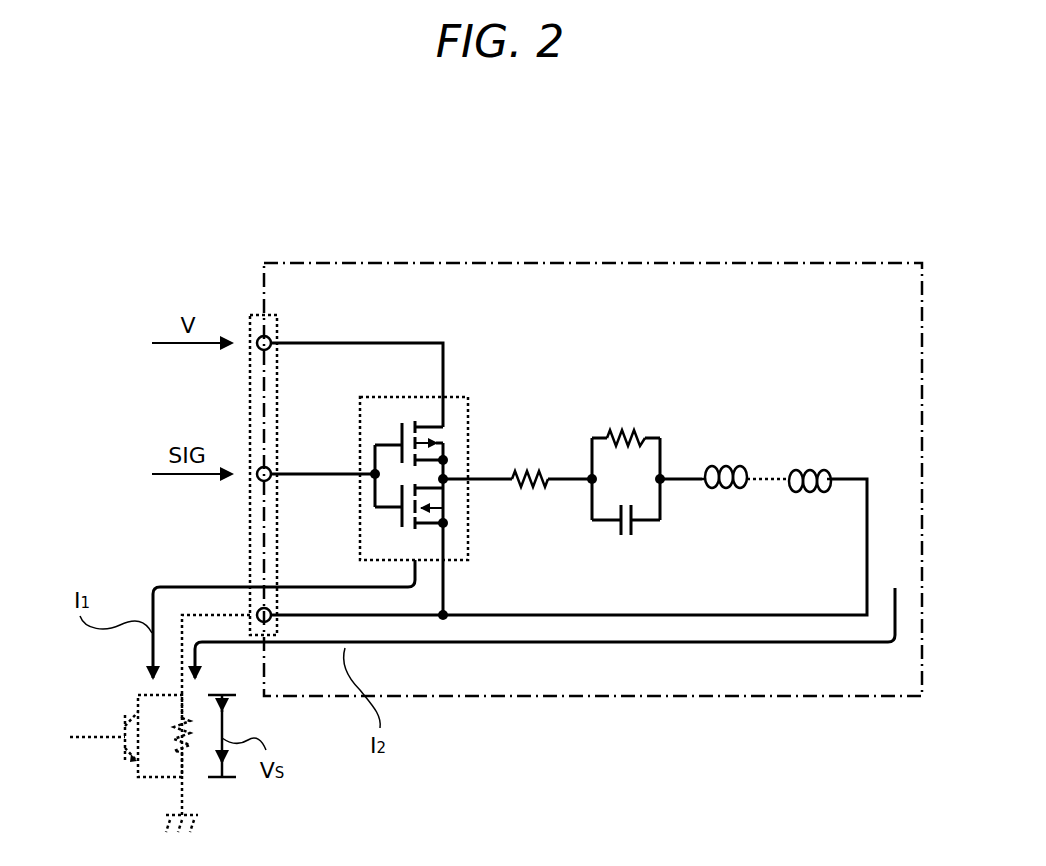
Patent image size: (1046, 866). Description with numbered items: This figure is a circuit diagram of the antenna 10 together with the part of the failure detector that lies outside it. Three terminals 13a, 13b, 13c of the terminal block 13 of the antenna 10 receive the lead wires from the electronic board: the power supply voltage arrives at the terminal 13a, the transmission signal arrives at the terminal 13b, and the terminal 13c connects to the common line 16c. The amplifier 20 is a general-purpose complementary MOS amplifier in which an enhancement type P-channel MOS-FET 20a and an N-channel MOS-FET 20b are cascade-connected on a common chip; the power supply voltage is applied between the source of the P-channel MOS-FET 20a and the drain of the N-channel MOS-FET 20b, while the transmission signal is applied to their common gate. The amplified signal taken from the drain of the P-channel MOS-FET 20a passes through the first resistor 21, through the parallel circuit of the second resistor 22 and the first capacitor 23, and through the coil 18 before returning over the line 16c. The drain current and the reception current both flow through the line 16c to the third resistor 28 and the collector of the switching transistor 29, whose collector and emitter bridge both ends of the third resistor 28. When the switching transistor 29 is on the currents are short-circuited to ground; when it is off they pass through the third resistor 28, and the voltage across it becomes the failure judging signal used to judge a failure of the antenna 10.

The antenna 10 is at (772, 256).
The terminals 13 is at (255, 313).
The terminal 13a is at (271, 341).
The terminal 13b is at (271, 473).
The terminal 13c is at (271, 612).
The line 16c is at (213, 612).
The coil 18 is at (702, 455).
The amplifier 20 is at (440, 448).
The P-channel MOS-FET 20a is at (450, 438).
The N-channel MOS-FET 20b is at (452, 519).
The first resistor 21 is at (528, 473).
The second resistor 22 is at (625, 436).
The first capacitor 23 is at (634, 527).
The third resistor 28 is at (188, 752).
The switching transistor 29 is at (130, 716).